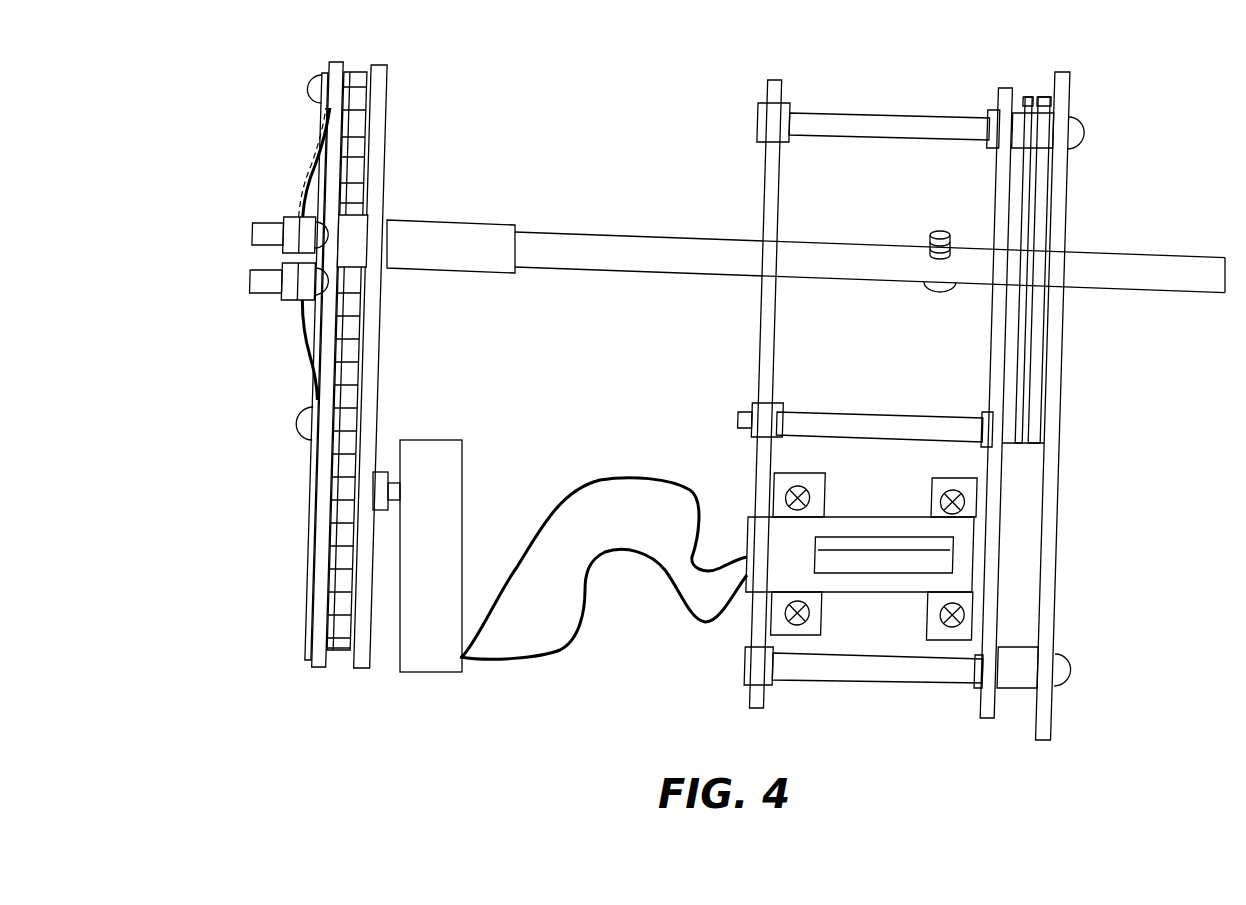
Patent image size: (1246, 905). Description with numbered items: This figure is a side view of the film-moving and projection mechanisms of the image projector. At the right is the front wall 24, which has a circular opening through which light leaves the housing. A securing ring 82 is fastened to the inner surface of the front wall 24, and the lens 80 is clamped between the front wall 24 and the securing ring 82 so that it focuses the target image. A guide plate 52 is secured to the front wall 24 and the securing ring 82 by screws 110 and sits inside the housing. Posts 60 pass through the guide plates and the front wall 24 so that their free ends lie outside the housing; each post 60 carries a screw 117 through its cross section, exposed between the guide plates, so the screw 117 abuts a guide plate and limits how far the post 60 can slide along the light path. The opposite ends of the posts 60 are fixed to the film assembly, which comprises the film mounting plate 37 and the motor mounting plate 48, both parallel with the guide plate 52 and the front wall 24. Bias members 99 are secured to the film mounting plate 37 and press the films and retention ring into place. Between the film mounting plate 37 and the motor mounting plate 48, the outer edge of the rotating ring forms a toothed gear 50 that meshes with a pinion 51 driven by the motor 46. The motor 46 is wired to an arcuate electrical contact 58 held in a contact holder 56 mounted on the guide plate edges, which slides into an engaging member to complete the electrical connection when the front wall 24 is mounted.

The front wall 24 is at (1070, 604).
The film mounting plate 37 is at (325, 572).
The motor 46 is at (430, 650).
The motor mounting plate 48 is at (395, 125).
The toothed gear 50 is at (362, 78).
The pinion 51 is at (345, 652).
The guide plate 52 is at (785, 200).
The contact holder 56 is at (818, 540).
The arcuate electrical contact 58 is at (895, 560).
The post 60 is at (622, 250).
The lens 80 is at (1052, 190).
The securing ring 82 is at (1032, 97).
The bias member 99 is at (312, 165).
The screw 110 is at (868, 124).
The screw 117 is at (938, 232).